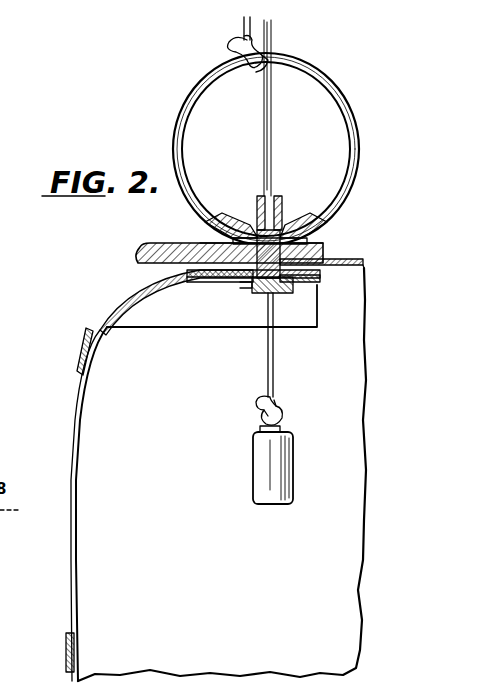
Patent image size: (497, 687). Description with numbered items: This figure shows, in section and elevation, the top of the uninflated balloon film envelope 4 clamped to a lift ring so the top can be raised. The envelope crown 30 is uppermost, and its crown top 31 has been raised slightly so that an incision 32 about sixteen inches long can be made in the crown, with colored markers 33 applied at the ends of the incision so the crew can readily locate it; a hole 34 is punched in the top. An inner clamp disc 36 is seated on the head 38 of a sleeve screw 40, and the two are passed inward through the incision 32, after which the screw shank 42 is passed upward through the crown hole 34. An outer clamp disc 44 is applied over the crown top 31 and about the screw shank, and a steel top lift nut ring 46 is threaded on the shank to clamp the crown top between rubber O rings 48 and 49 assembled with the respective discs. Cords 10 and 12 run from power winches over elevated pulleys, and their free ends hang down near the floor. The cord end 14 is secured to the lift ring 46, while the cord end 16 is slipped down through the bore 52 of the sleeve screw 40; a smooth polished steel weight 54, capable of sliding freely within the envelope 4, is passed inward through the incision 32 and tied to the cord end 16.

The envelope 4 is at (350, 510).
The cord 10 is at (242, 19).
The cord 12 is at (273, 26).
The cord end 14 is at (230, 43).
The cord end 16 is at (280, 400).
The envelope crown 30 is at (124, 340).
The crown top 31 is at (224, 283).
The incision 32 is at (82, 527).
The colored markers 33 is at (82, 355).
The hole 34 is at (245, 289).
The inner clamp disc 36 is at (157, 312).
The head 38 is at (292, 290).
The sleeve screw 40 is at (285, 212).
The screw shank 42 is at (279, 198).
The outer clamp disc 44 is at (162, 245).
The top lift nut ring 46 is at (358, 136).
The rubber O ring 48 is at (192, 285).
The rubber O ring 49 is at (205, 246).
The bore 52 is at (257, 198).
The weight 54 is at (294, 467).